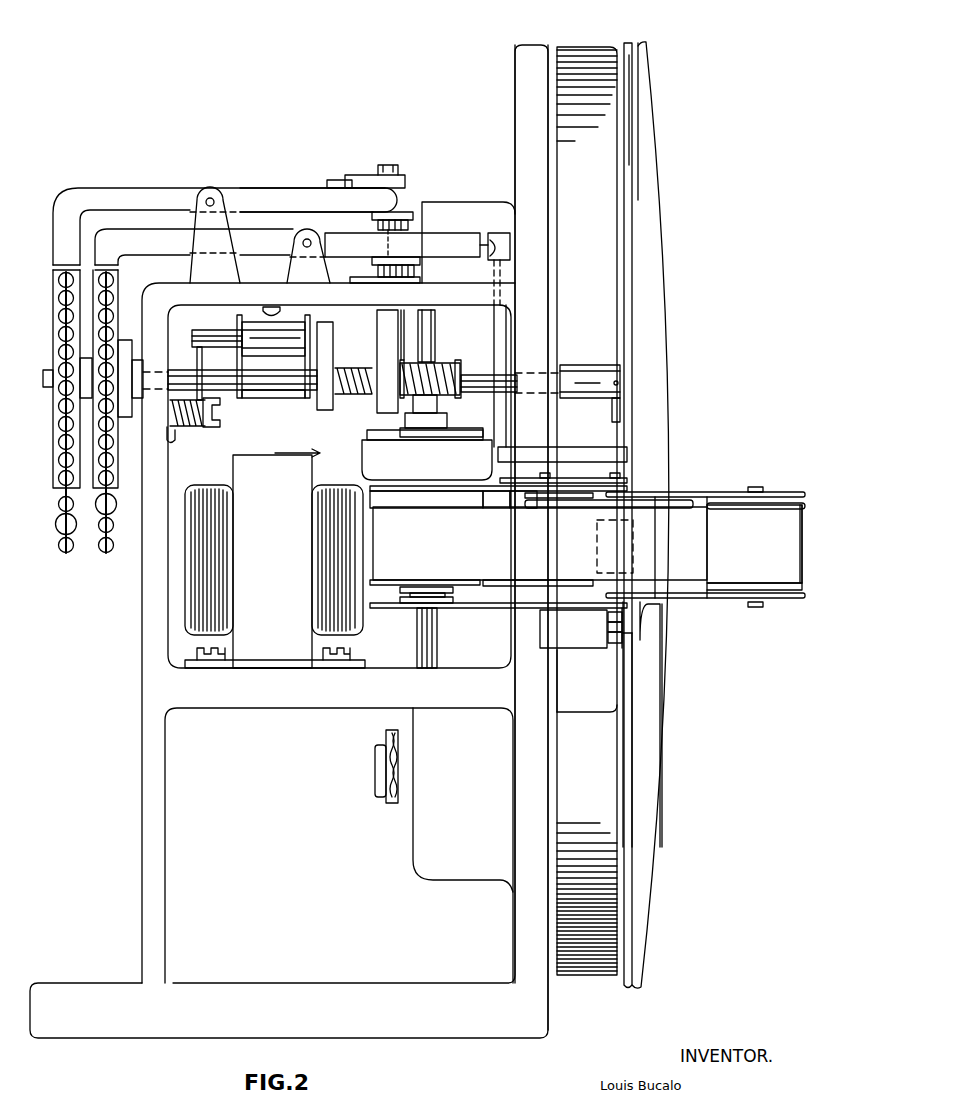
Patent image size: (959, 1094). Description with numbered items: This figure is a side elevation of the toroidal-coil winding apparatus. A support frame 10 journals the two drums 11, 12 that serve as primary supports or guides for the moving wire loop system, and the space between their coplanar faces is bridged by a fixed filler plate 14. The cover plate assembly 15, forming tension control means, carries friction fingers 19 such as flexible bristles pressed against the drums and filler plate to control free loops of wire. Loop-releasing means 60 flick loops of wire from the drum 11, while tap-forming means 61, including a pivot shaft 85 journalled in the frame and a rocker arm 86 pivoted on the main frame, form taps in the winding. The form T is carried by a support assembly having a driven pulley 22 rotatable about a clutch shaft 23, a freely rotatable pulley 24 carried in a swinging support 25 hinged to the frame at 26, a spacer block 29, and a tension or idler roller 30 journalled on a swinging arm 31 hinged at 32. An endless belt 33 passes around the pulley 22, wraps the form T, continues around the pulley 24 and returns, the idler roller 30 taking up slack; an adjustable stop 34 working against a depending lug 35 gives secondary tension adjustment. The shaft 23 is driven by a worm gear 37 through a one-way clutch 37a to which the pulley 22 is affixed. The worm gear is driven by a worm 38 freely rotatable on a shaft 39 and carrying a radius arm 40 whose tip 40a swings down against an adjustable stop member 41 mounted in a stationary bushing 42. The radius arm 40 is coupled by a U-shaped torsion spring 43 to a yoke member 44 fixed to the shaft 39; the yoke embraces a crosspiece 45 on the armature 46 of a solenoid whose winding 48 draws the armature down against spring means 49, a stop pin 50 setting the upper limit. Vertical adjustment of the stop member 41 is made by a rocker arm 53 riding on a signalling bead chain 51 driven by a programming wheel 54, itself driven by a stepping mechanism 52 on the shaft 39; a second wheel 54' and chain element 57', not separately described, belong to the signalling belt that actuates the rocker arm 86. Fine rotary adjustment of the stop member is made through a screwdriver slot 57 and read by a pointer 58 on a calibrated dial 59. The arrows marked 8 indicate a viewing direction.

The support frame 10 is at (533, 50).
The drum 11 is at (588, 62).
The drum 12 is at (591, 957).
The filler plate 14 is at (610, 697).
The cover plate assembly 15 is at (660, 312).
The fingers 19 is at (631, 43).
The driven pulley 22 is at (357, 590).
The clutch shaft 23 is at (417, 643).
The freely rotatable pulley 24 is at (806, 590).
The swinging support 25 is at (720, 493).
The hinge 26 is at (617, 477).
The spacer block 29 is at (497, 602).
The tension or idler roller 30 is at (690, 573).
The swinging arm 31 is at (663, 493).
The hinge 32 is at (547, 478).
The endless belt 33 is at (545, 560).
The adjustable stop 34 is at (632, 687).
The depending lug 35 is at (640, 630).
The worm gear 37 is at (445, 394).
The one-way clutch 37a is at (362, 463).
The worm 38 is at (456, 360).
The shaft 39 is at (480, 358).
The radius arm 40 is at (360, 421).
The tip of the radius arm 40a is at (382, 320).
The adjustable stop member 41 is at (400, 221).
The stationary bushing 42 is at (395, 270).
The U-shaped torsion spring 43 is at (378, 399).
The yoke member 44 is at (323, 400).
The crosspiece 45 is at (215, 333).
The armature 46 is at (296, 400).
The winding 48 is at (192, 588).
The spring means 49 is at (194, 426).
The stop pin 50 is at (263, 310).
The signalling chain 51 is at (57, 547).
The stepping mechanism 52 is at (125, 340).
The rocker arm 53 is at (130, 198).
The programming wheel 54 is at (48, 379).
The chain guide channel 54' is at (113, 398).
The screwdriver slot 57 is at (401, 146).
The ball chain 57' is at (117, 537).
The pointer 58 is at (362, 177).
The calibrated dial 59 is at (332, 182).
The loop-releasing means 60 is at (615, 370).
The tap-forming means 61 is at (615, 455).
The pivot shaft 85 is at (500, 233).
The rocker arm 86 is at (270, 242).
The lever arm 8 is at (372, 224).
The toroidal form T is at (638, 570).